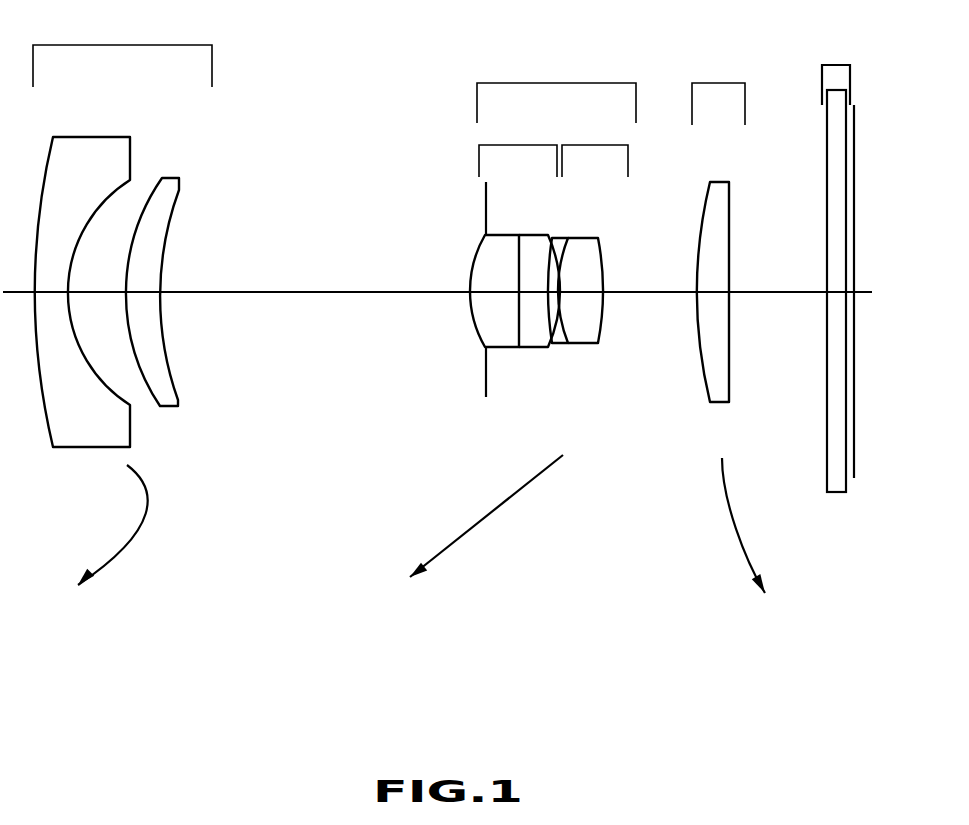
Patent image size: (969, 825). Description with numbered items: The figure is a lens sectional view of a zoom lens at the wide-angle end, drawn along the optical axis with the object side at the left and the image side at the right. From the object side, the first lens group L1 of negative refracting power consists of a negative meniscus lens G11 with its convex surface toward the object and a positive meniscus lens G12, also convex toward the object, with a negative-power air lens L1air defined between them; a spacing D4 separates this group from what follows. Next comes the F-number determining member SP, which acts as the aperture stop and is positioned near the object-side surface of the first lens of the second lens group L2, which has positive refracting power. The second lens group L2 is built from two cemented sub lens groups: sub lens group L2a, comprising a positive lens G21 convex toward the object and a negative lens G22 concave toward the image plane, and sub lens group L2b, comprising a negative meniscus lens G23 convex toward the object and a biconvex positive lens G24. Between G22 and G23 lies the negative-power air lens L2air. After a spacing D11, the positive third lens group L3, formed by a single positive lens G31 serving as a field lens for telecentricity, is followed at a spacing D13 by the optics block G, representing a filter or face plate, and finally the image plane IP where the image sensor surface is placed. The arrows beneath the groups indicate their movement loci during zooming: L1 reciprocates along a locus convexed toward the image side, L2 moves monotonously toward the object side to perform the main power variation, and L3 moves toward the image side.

The first lens group L1 is at (125, 292).
The negative lens G11 is at (87, 158).
The positive lens G12 is at (165, 187).
The air lens L1air is at (108, 348).
The air gap between first and second lens units D4 is at (263, 292).
The F-number determining member SP is at (483, 192).
The second lens group L2 is at (546, 311).
The sub lens group (2a) L2a is at (491, 228).
The sub lens group (2b) L2b is at (615, 226).
The positive lens G21 is at (490, 273).
The negative lens G22 is at (541, 246).
The negative lens G23 is at (560, 249).
The positive lens G24 is at (588, 253).
The air lens L2air is at (543, 310).
The air gap between second and third lens units D11 is at (642, 292).
The third lens group L3 is at (728, 319).
The positive lens G31 is at (715, 203).
The air gap between third lens unit and glass block D13 is at (762, 292).
The optics block G is at (836, 259).
The image plane IP is at (855, 145).